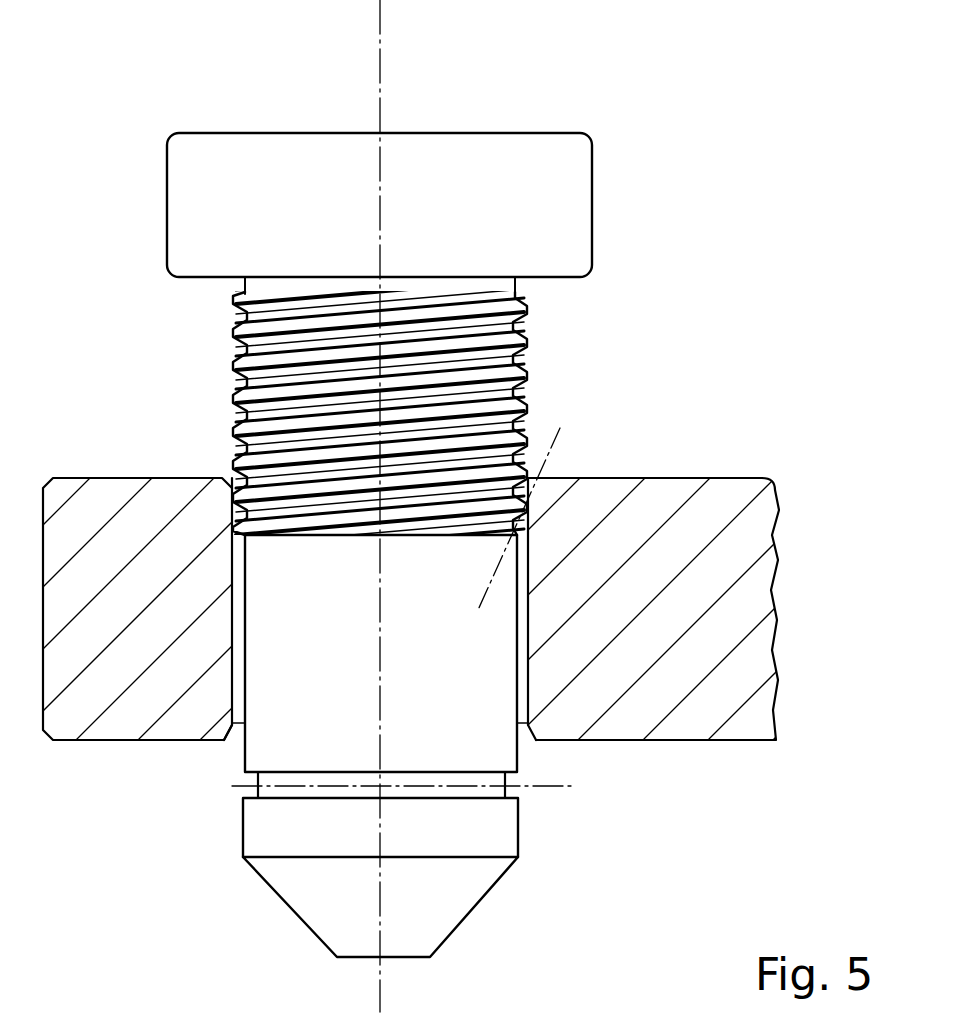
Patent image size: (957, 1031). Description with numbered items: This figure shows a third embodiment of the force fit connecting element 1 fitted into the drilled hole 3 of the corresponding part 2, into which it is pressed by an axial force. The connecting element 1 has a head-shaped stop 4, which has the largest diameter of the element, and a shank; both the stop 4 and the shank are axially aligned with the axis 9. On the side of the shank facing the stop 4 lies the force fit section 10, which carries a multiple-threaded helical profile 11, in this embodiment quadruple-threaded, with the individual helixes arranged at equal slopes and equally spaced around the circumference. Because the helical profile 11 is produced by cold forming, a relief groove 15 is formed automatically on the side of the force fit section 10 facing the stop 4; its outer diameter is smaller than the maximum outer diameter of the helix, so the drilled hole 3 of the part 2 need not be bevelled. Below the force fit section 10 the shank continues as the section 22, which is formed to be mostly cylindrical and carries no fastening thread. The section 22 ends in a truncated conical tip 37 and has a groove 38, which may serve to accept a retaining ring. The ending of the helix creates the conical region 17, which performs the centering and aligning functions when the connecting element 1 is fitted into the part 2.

The force fit connecting element 1 is at (663, 222).
The part 2 is at (692, 513).
The drilled hole 3 is at (528, 637).
The stop 4 is at (497, 158).
The axis 9 is at (380, 97).
The force fit section 10 is at (402, 400).
The multiple-threaded helical profile 11 is at (523, 393).
The relief groove 15 is at (513, 283).
The conical region 17 is at (553, 445).
The section 22 is at (300, 689).
The truncated conical tip 37 is at (318, 900).
The groove 38 is at (290, 784).